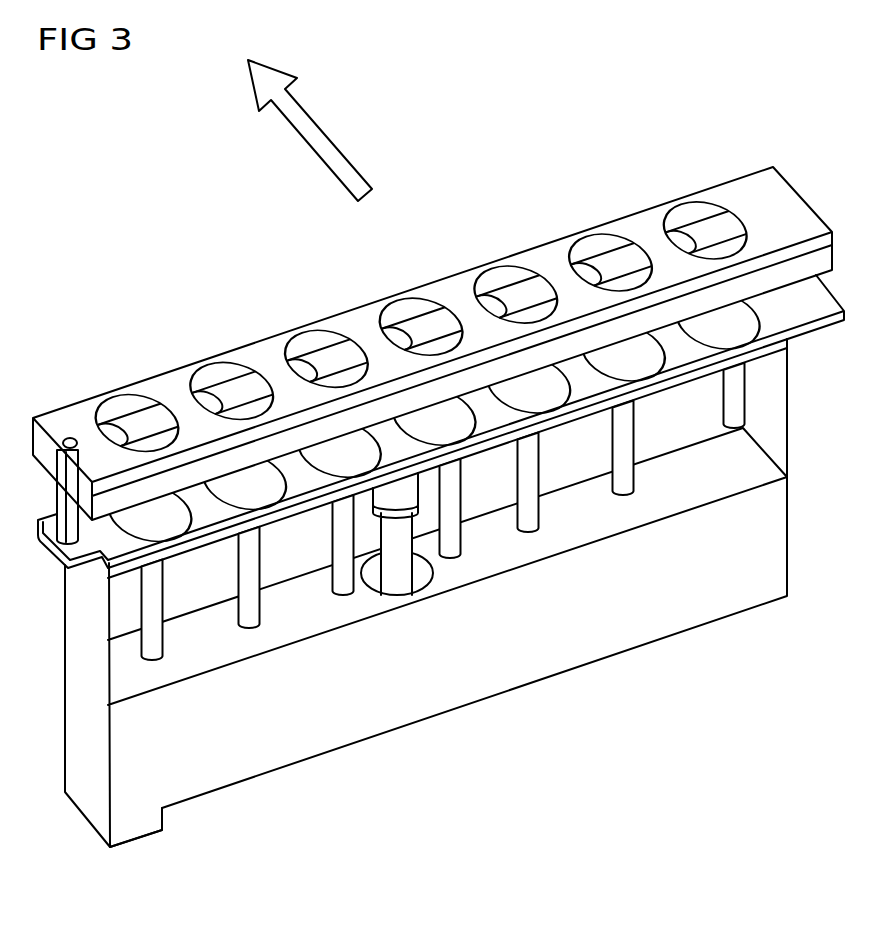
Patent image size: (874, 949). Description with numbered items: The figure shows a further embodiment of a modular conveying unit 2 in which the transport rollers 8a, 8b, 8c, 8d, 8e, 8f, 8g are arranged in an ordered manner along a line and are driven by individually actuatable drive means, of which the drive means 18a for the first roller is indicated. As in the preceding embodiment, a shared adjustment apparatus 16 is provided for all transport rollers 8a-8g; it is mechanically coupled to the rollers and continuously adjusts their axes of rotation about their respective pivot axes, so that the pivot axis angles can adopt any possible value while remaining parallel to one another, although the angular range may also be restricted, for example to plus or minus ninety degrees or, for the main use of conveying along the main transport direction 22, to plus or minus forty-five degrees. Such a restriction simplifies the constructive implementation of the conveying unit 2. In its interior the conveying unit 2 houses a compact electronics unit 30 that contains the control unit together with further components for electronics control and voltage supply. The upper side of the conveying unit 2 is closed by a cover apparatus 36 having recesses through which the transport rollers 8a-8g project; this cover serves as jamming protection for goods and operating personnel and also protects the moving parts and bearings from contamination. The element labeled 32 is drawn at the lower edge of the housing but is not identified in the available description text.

The conveying unit 2 is at (770, 119).
The transport roller 8a is at (136, 422).
The transport roller 8b is at (231, 390).
The transport roller 8c is at (326, 358).
The transport roller 8d is at (420, 326).
The transport roller 8e is at (514, 294).
The transport roller 8f is at (608, 262).
The transport roller 8g is at (704, 230).
The adjustment apparatus 16 is at (397, 588).
The drive means 18a is at (165, 527).
The main transport direction 22 is at (338, 144).
The electronics unit 30 is at (800, 470).
The groove 32 is at (132, 830).
The cover apparatus 36 is at (68, 420).